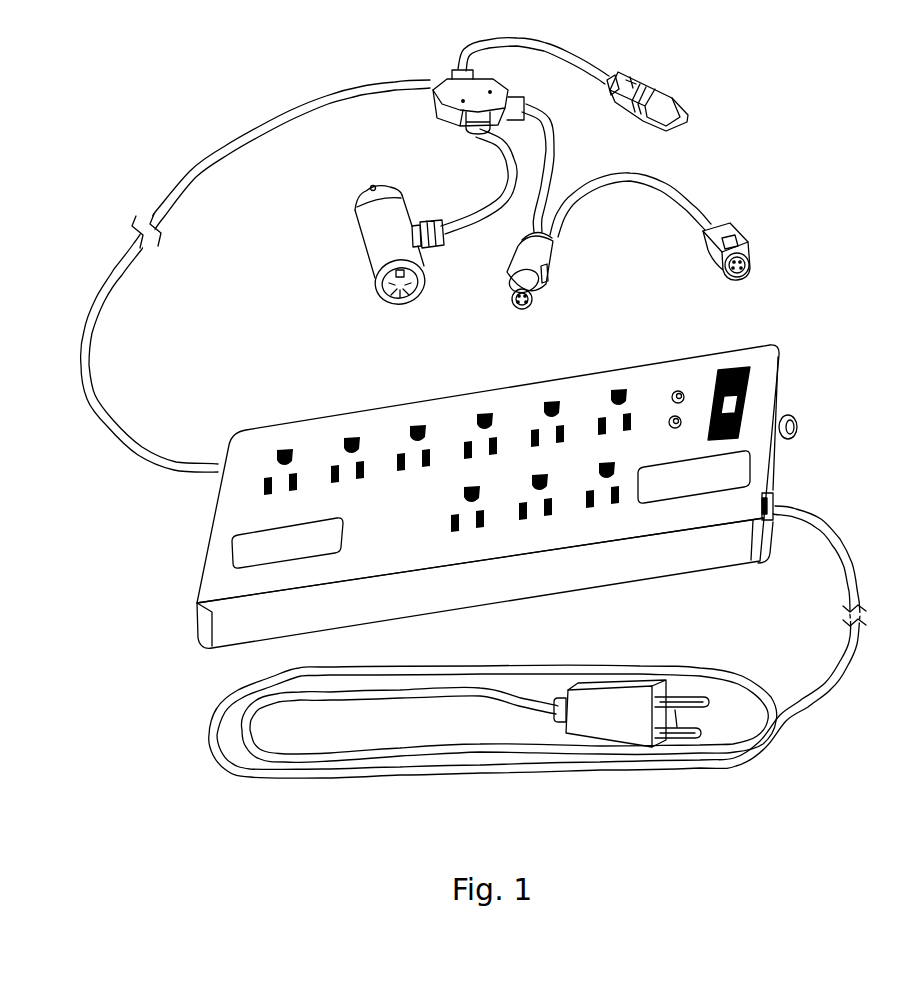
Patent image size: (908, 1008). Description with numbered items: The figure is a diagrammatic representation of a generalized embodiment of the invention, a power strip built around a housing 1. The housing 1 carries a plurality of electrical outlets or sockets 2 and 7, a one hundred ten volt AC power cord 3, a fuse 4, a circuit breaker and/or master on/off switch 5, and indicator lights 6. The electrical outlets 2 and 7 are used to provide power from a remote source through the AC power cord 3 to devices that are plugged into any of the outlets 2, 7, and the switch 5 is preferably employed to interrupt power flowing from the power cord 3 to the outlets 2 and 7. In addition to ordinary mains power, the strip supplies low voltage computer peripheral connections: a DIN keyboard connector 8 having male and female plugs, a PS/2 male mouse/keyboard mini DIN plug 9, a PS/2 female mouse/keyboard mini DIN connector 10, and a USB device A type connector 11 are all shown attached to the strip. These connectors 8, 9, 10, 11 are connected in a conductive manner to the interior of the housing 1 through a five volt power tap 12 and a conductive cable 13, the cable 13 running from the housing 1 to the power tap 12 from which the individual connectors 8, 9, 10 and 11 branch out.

The housing 1 is at (212, 525).
The electrical outlets 2 is at (590, 605).
The 110V AC power cord 3 is at (620, 710).
The fuse 4 is at (796, 427).
The circuit breaker and/or master on/off switch 5 is at (748, 390).
The indicator lights 6 is at (677, 418).
The electrical outlets 7 is at (622, 388).
The DIN keyboard connector 8 is at (390, 218).
The PS/2 male connector mouse/keyboard (mini DIN) plug 9 is at (548, 257).
The PS/2 female connector mouse/keyboard (mini DIN) connector 10 is at (747, 238).
The USB device A type connector 11 is at (628, 112).
The 5 Volt power tap 12 is at (450, 82).
The conductive cable 13 is at (170, 205).